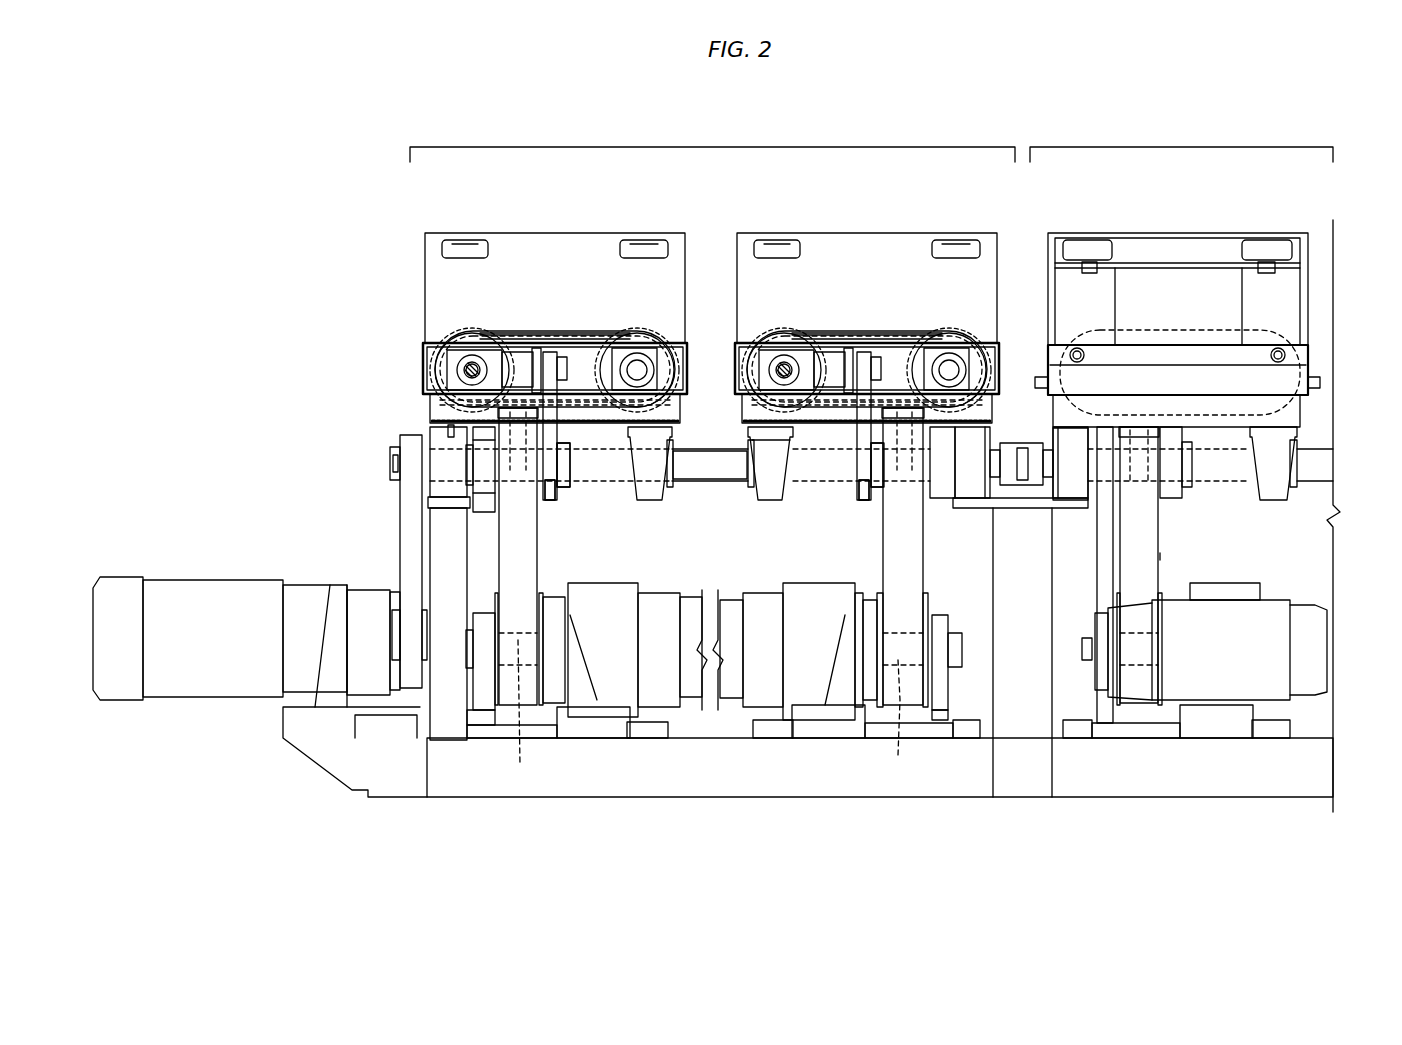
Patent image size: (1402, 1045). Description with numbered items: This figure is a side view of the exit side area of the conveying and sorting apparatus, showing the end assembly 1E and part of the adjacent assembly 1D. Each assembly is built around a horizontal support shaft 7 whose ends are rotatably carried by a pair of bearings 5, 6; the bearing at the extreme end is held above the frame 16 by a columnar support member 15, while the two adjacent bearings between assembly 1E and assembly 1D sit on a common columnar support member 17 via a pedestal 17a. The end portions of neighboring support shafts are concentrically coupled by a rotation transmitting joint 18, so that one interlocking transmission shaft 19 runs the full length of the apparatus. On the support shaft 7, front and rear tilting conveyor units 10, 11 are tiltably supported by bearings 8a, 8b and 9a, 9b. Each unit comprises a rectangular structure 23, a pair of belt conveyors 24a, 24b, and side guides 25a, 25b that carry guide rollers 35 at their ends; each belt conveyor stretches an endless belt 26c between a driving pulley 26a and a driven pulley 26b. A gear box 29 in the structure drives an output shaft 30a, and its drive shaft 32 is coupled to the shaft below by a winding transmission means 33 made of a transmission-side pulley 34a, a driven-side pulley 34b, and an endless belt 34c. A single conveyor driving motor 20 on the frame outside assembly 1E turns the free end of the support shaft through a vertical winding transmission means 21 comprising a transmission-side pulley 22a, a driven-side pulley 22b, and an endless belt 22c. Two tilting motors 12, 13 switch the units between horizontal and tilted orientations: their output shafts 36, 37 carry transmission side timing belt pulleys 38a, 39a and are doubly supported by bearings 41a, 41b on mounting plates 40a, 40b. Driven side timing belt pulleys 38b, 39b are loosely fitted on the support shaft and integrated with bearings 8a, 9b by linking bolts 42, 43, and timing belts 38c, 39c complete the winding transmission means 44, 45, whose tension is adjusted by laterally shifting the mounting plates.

The assembly 1E is at (712, 141).
The assembly 1D is at (1181, 141).
The bearing 5 is at (970, 498).
The bearing 6 is at (450, 437).
The support shaft 7 is at (720, 488).
The bearing 8a is at (942, 462).
The bearing 8b is at (766, 462).
The bearing 9a is at (647, 498).
The bearing 9b is at (445, 465).
The tilting conveyor unit 10 is at (822, 226).
The tilting conveyor unit 11 is at (495, 230).
The tilting motor 12 is at (800, 625).
The tilting motor 13 is at (592, 625).
The columnar support member 15 is at (440, 553).
The frame 16 is at (780, 775).
The common columnar support member 17 is at (1040, 695).
The pedestal 17a is at (1003, 510).
The rotation transmitting joint 18 is at (1031, 487).
The interlocking transmission shaft 19 is at (693, 488).
The conveyor driving motor 20 is at (190, 650).
The winding transmission means 21 is at (396, 565).
The transmission-side pulley 22a is at (385, 673).
The driven-side pulley 22b is at (392, 462).
The endless belt 22c is at (410, 524).
The structure 23 is at (417, 373).
The belt conveyor 24a is at (1260, 330).
The belt conveyor 24b is at (768, 326).
The side guide 25a is at (1200, 303).
The side guide 25b is at (568, 291).
The driving pulley 26a is at (475, 335).
The driven pulley 26b is at (642, 335).
The endless belt 26c is at (515, 332).
The gear box 29 is at (462, 352).
The output shaft 30a is at (423, 348).
The drive shaft 32 is at (545, 352).
The winding transmission means 33 is at (568, 413).
The transmission-side pulley 34a is at (562, 357).
The driven-side pulley 34b is at (574, 468).
The endless belt 34c is at (553, 494).
The guide roller 35 is at (645, 250).
The output shaft 36 is at (897, 717).
The output shaft 37 is at (520, 715).
The transmission side timing belt pulley 38a is at (876, 625).
The driven side timing belt pulley 38b is at (880, 507).
The timing belt 38c is at (915, 604).
The transmission side timing belt pulley 39a is at (540, 680).
The driven side timing belt pulley 39b is at (480, 470).
The timing belt 39c is at (532, 568).
The mounting plate 40a is at (925, 736).
The mounting plate 40b is at (540, 735).
The bearing 41a is at (945, 686).
The bearing 41b is at (480, 684).
The linking bolt 42 is at (903, 556).
The linking bolt 43 is at (1140, 394).
The winding transmission means 44 is at (934, 578).
The winding transmission means 45 is at (493, 573).